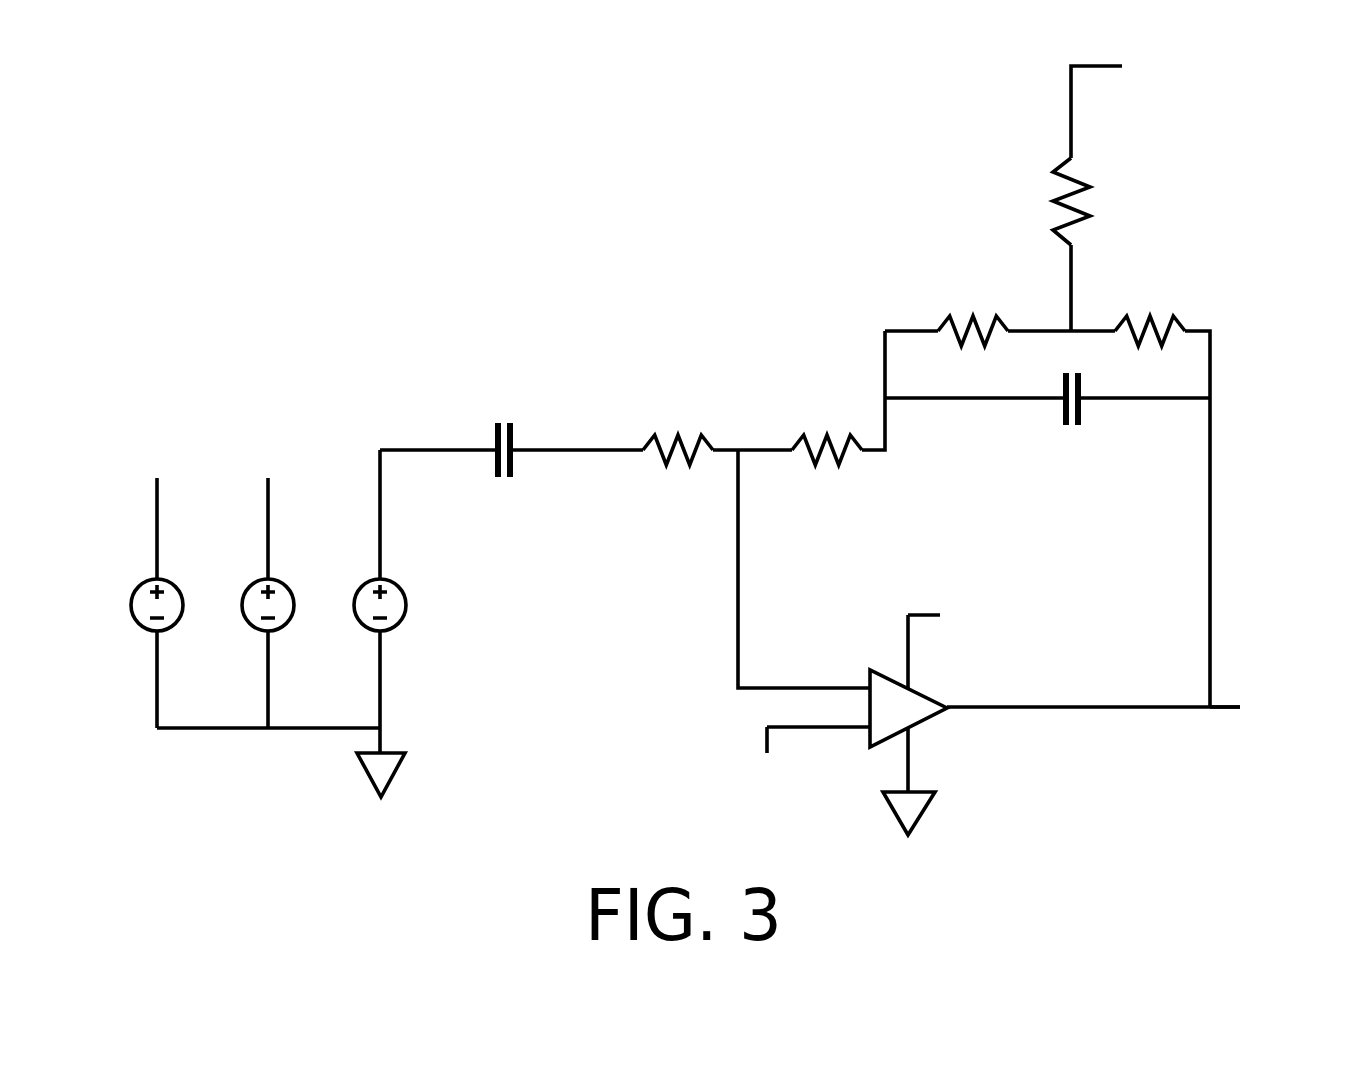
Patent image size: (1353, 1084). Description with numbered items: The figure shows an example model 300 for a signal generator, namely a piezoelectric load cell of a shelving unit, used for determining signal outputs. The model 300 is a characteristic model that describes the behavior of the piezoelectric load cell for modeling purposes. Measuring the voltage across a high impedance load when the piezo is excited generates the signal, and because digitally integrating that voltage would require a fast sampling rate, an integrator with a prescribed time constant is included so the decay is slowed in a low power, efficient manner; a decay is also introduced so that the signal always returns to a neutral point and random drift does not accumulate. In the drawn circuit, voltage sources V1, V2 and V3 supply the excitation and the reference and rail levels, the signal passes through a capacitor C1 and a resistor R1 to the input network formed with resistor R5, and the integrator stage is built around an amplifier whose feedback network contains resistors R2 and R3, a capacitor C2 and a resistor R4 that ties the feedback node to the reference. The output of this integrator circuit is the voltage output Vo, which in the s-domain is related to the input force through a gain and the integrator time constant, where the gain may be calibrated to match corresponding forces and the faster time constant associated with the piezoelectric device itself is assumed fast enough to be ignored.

The model 300 is at (249, 247).
The voltage source V1 is at (365, 540).
The voltage source V2 (VREF) V2 is at (253, 554).
The voltage source V3 (VRAIL) V3 is at (141, 554).
The capacitor C1 is at (504, 468).
The capacitor C2 is at (1071, 418).
The resistor R1 is at (678, 463).
The resistor R2 is at (973, 343).
The resistor R3 is at (1150, 343).
The resistor R4 is at (1085, 201).
The resistor R5 is at (827, 463).
The voltage output Vo is at (1255, 707).